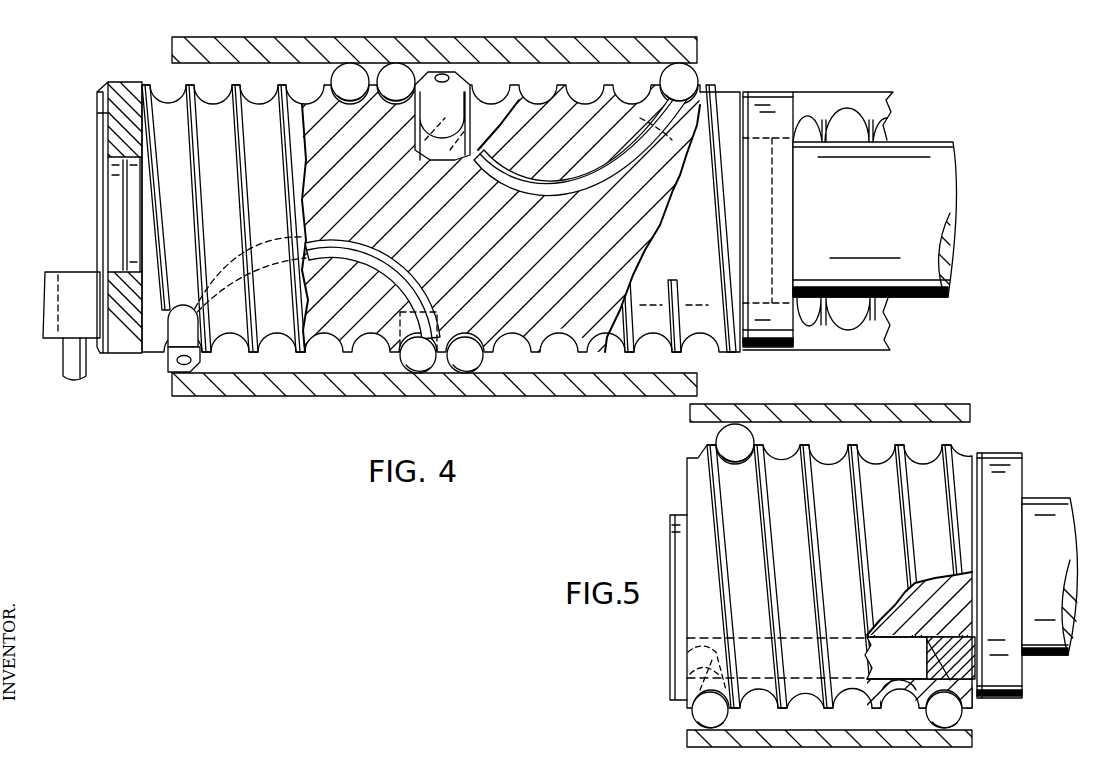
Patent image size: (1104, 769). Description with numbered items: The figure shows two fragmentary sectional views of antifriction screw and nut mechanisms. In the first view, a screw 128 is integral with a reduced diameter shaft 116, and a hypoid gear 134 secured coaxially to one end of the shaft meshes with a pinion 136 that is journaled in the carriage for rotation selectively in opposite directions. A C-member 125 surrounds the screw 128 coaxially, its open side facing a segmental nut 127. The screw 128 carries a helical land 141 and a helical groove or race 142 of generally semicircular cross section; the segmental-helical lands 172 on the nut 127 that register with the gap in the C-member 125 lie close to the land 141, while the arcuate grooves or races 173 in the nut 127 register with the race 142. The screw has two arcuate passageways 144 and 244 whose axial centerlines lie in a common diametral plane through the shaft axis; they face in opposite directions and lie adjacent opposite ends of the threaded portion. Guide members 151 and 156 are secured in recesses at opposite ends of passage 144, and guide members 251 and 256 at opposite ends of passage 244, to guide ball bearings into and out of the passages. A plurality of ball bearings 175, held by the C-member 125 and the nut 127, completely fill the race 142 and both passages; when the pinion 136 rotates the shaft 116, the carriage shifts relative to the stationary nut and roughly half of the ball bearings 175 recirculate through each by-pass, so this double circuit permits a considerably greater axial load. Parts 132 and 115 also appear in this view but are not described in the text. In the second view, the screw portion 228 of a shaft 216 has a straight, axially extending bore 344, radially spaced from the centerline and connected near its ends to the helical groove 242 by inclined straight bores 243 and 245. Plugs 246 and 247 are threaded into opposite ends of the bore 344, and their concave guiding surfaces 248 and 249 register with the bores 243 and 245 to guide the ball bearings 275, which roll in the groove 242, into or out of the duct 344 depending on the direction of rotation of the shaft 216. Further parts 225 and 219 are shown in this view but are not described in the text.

In FIG. 4, the C-member 125 is at (533, 48).
In FIG. 4, the screw 128 is at (536, 199).
In FIG. 4, the helical groove or race 142 is at (186, 90).
In FIG. 4, the helical land 141 is at (630, 318).
In FIG. 4, the arcuate passageway 144 is at (363, 270).
In FIG. 4, the arcuate passageway 244 is at (568, 190).
In FIG. 4, the guide member 251 is at (441, 70).
In FIG. 4, the ball bearings 175 is at (354, 66).
In FIG. 4, the guide member 256 is at (680, 66).
In FIG. 4, the guide member 156 is at (418, 367).
In FIG. 4, the guide member 151 is at (172, 358).
In FIG. 4, the hypoid gear 134 is at (136, 217).
In FIG. 4, the groove 132 is at (120, 215).
In FIG. 4, the pinion 136 is at (48, 312).
In FIG. 4, the collar 115 is at (790, 112).
In FIG. 4, the reduced diameter shaft 116 is at (920, 145).
In FIG. 4, the segmental nut 127 is at (832, 210).
In FIG. 4, the arcuate grooves or races 173 is at (840, 118).
In FIG. 4, the segmental-helical lands 172 is at (828, 318).
In FIG. 5, the guide plate 225 is at (850, 407).
In FIG. 5, the screw portion 228 is at (869, 561).
In FIG. 5, the plug 246 is at (690, 648).
In FIG. 5, the concave guiding surface 248 is at (690, 680).
In FIG. 5, the straight axial duct or bore 344 is at (893, 642).
In FIG. 5, the straight bore 245 is at (915, 705).
In FIG. 5, the plug 247 is at (978, 672).
In FIG. 5, the helical groove 242 is at (925, 440).
In FIG. 5, the straight bore 243 is at (740, 690).
In FIG. 5, the ball bearings 275 is at (965, 716).
In FIG. 5, the concave guiding surface 249 is at (912, 698).
In FIG. 5, the collar 219 is at (982, 490).
In FIG. 5, the shaft 216 is at (1055, 505).